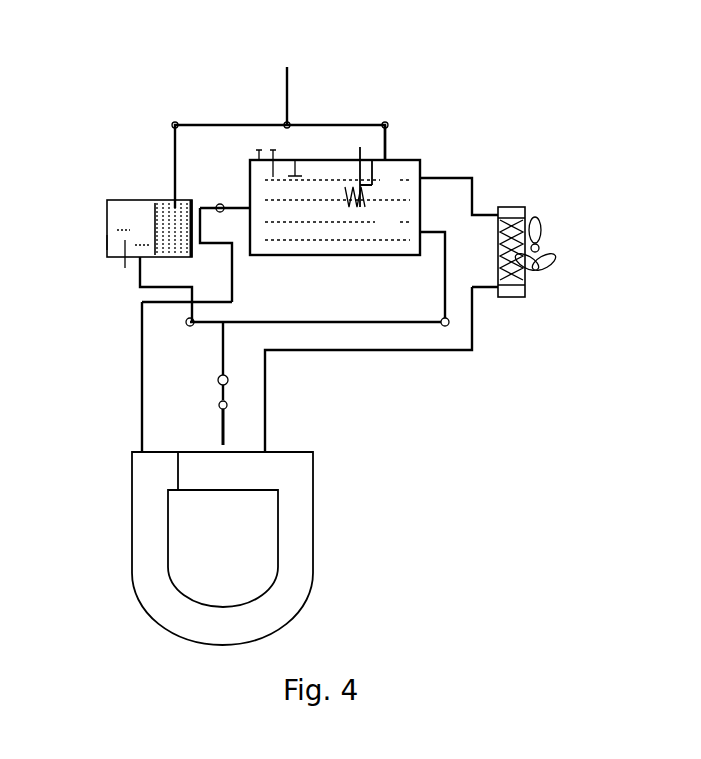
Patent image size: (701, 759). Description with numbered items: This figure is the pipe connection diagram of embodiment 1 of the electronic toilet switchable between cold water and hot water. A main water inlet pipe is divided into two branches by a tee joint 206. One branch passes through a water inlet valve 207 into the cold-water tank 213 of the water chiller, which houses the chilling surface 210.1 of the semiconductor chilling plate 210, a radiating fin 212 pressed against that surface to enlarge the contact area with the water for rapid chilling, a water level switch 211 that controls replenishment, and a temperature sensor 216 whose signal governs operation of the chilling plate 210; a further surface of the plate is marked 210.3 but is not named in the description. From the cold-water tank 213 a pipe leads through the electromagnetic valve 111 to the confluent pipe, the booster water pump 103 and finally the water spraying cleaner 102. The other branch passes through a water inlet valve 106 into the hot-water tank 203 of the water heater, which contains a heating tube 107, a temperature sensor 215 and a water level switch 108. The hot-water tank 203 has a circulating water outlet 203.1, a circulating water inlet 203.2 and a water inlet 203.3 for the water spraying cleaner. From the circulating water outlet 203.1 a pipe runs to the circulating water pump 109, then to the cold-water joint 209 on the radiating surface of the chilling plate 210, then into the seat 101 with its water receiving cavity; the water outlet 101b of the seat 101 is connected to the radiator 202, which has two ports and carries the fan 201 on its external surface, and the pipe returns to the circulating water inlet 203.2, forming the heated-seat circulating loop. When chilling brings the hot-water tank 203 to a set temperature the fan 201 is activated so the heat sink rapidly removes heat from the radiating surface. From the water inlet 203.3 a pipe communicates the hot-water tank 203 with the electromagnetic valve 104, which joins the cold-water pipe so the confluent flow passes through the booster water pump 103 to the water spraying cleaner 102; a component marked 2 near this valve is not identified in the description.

The pipe 1 is at (140, 287).
The valve 2 is at (447, 303).
The seat 101 is at (308, 528).
The water outlet of the seat 101b is at (275, 452).
The water spraying cleaner 102 is at (233, 425).
The booster water pump 103 is at (233, 380).
The electromagnetic valve 104 is at (452, 320).
The water inlet valve 106 is at (385, 122).
The heating tube 107 is at (365, 185).
The water level switch 108 is at (373, 168).
The circulating water pump 109 is at (193, 203).
The electromagnetic valve 111 is at (186, 323).
The fan 201 is at (541, 240).
The radiator 202 is at (525, 205).
The hot-water tank 203 is at (422, 213).
The circulating water outlet 203.1 is at (248, 206).
The circulating water inlet 203.2 is at (460, 185).
The water inlet for the water spraying cleaner 203.3 is at (451, 269).
The tee joint 206 is at (292, 121).
The water inlet valve 207 is at (173, 122).
The cold-water joint 209 is at (197, 205).
The semiconductor chilling plate 210 is at (165, 203).
The chilling surface 210.1 is at (161, 268).
The filter port 210.3 is at (214, 268).
The water level switch 211 is at (147, 202).
The radiating fin 212 is at (140, 218).
The cold-water tank 213 is at (107, 240).
The temperature sensor 216 is at (123, 270).
The temperature sensor 215 is at (293, 157).